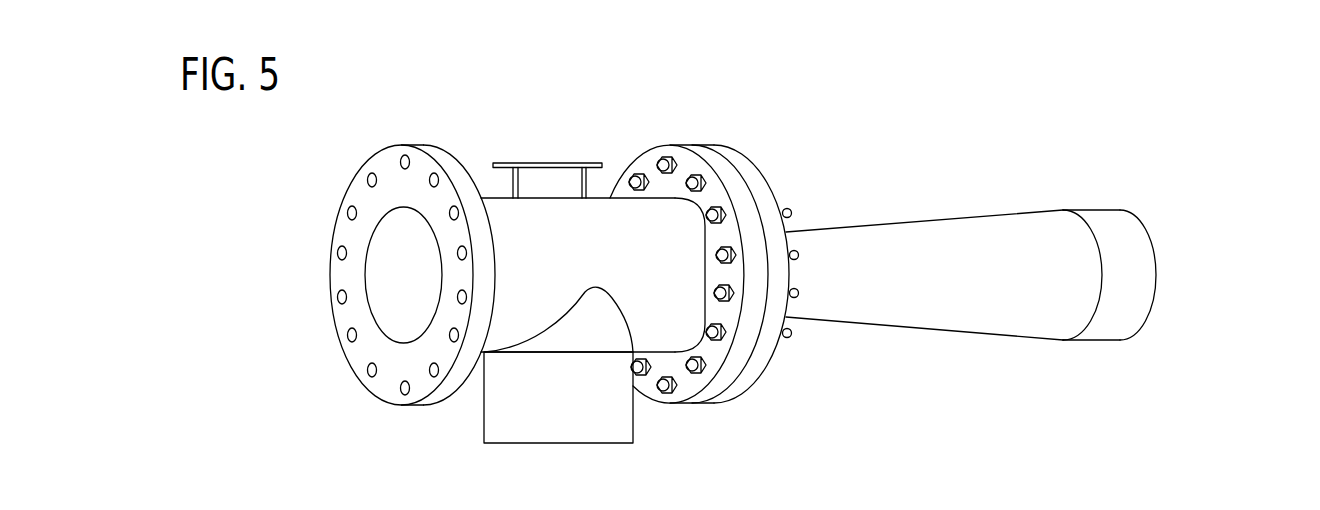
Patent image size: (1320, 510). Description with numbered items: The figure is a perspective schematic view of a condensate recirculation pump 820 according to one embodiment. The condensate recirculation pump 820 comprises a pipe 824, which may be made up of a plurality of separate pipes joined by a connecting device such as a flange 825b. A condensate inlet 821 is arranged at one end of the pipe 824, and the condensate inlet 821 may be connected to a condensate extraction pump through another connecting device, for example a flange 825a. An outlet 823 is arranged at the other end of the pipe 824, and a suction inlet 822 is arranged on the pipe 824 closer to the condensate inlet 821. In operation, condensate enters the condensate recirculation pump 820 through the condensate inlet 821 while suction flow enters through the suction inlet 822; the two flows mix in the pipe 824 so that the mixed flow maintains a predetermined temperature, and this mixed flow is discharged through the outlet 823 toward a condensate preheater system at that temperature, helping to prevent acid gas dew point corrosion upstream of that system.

The condensate recirculation pump 820 is at (952, 92).
The condensate inlet 821 is at (403, 273).
The suction inlet 822 is at (558, 443).
The outlet 823 is at (1152, 272).
The pipe 824 is at (828, 228).
The flange 825a is at (415, 135).
The flange 825b is at (705, 137).